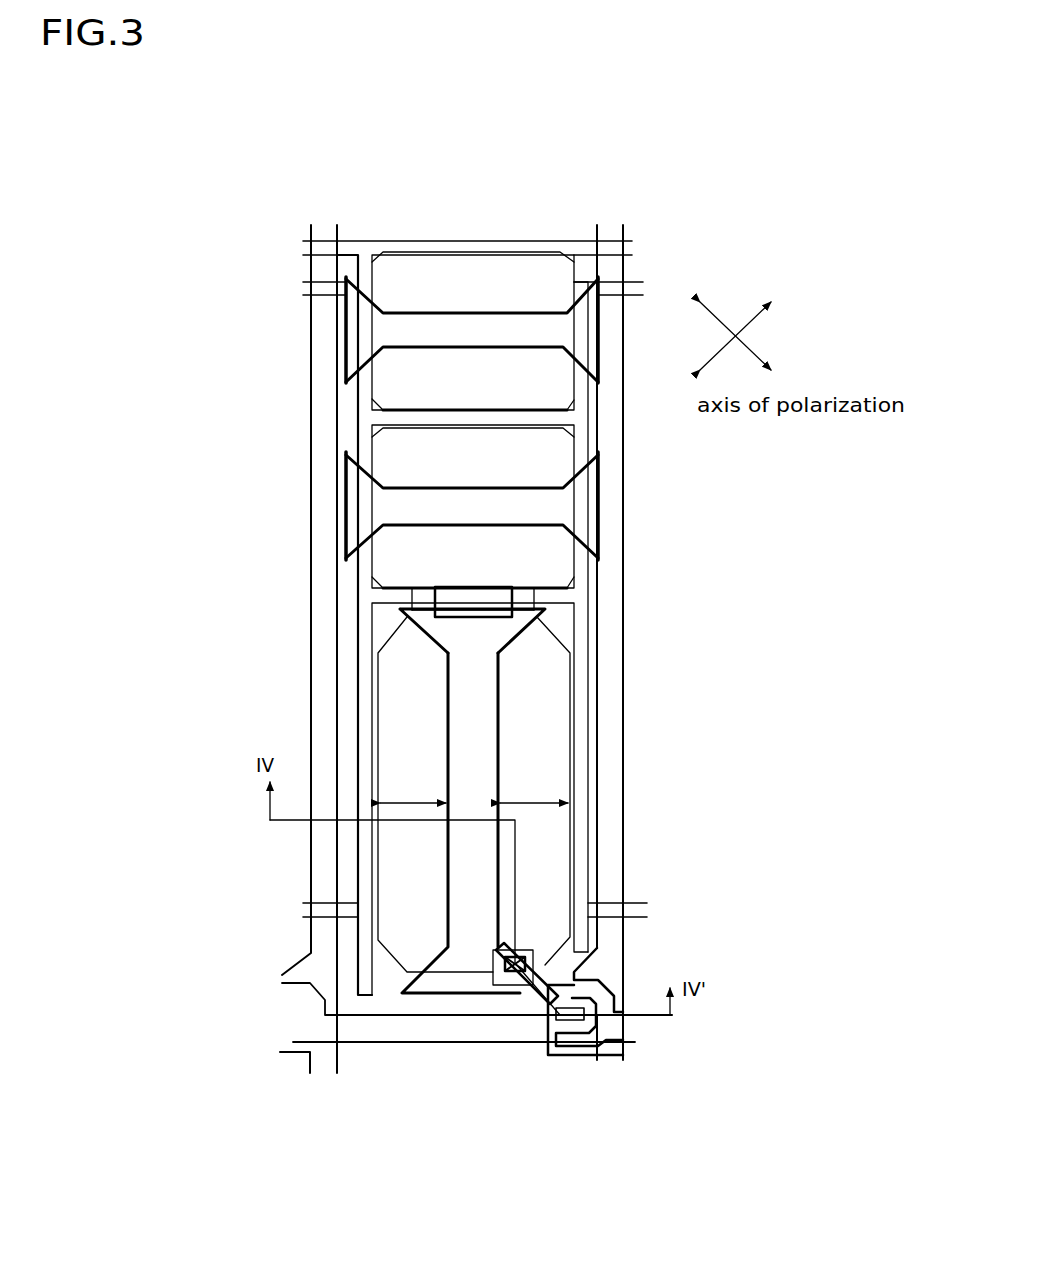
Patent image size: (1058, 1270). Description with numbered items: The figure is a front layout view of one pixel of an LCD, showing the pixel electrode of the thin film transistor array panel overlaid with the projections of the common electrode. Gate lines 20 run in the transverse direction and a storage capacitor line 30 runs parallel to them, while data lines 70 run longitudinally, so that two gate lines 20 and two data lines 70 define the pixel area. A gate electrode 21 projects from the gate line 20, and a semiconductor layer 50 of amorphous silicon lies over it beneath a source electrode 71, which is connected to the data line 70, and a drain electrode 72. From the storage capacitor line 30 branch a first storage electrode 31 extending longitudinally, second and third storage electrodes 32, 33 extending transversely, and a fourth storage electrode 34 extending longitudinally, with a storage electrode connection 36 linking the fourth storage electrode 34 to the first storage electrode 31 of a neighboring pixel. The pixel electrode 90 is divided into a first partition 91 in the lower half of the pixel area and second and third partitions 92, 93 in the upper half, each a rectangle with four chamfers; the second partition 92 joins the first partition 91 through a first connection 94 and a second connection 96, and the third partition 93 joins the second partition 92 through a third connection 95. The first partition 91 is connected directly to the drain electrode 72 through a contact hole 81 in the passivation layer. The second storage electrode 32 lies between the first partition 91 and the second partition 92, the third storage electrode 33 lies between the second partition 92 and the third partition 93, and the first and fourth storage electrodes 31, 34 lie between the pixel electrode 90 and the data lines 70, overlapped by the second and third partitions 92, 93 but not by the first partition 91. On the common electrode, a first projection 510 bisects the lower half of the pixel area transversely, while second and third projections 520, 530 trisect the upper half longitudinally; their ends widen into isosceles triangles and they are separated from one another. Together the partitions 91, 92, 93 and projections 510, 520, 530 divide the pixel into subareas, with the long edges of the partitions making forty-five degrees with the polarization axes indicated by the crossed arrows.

The gate line 20 is at (384, 1025).
The gate electrode 21 is at (608, 1020).
The storage capacitor line 30 is at (471, 245).
The first storage electrode 31 is at (360, 690).
The second storage electrode 32 is at (535, 417).
The third storage electrode 33 is at (528, 599).
The fourth storage electrode 34 is at (580, 702).
The storage electrode connection 36 is at (612, 912).
The semiconductor layer 50 is at (628, 1000).
The data line 70 is at (322, 336).
The source electrode 71 is at (598, 970).
The drain electrode 72 is at (533, 1007).
The contact hole 81 is at (494, 956).
The pixel electrode 90 is at (220, 432).
The first partition 91 is at (420, 680).
The second partition 92 is at (402, 540).
The third partition 93 is at (398, 379).
The first connection 94 is at (530, 613).
The third connection 95 is at (576, 418).
The second connection 96 is at (585, 545).
The first projection 510 is at (510, 752).
The second projection 520 is at (460, 488).
The third projection 530 is at (468, 311).